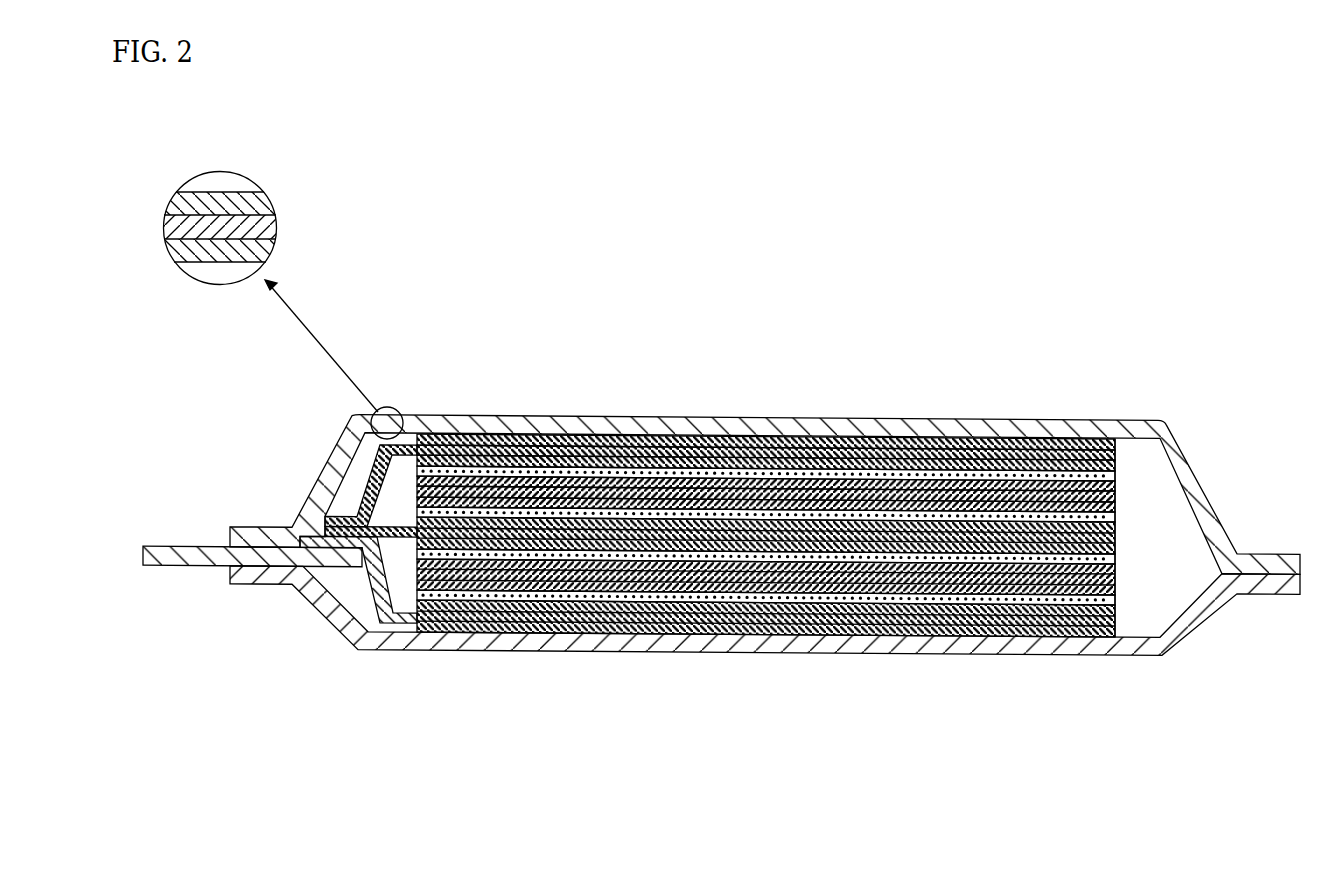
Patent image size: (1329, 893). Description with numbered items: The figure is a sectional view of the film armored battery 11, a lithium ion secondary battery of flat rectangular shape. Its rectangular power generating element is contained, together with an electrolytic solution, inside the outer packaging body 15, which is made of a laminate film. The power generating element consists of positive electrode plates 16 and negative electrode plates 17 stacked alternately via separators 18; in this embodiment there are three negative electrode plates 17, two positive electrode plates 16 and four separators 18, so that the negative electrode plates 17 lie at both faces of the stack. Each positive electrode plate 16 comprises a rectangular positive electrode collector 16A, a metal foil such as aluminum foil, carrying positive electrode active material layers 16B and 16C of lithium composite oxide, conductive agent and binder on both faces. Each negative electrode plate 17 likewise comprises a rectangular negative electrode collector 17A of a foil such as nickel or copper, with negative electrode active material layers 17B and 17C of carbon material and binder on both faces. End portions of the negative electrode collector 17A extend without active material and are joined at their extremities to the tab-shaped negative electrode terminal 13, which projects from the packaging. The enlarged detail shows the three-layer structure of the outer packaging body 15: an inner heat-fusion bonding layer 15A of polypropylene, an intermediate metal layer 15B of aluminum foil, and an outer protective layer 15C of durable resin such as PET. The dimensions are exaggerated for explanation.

The film armored battery 11 is at (670, 341).
The negative electrode terminal 13 is at (252, 556).
The outer packaging body 15 is at (731, 370).
The heat-fusion bonding layer 15A is at (225, 250).
The metal layer 15B is at (272, 228).
The protective layer 15C is at (268, 190).
The positive electrode plate 16 is at (766, 535).
The positive electrode collector 16A is at (766, 494).
The positive electrode active material layer 16B is at (766, 483).
The positive electrode active material layer 16C is at (766, 504).
The negative electrode plate 17 is at (707, 535).
The negative electrode collector 17A is at (766, 452).
The negative electrode active material layer 17B is at (766, 442).
The negative electrode active material layer 17C is at (766, 463).
The separator 18 is at (766, 535).